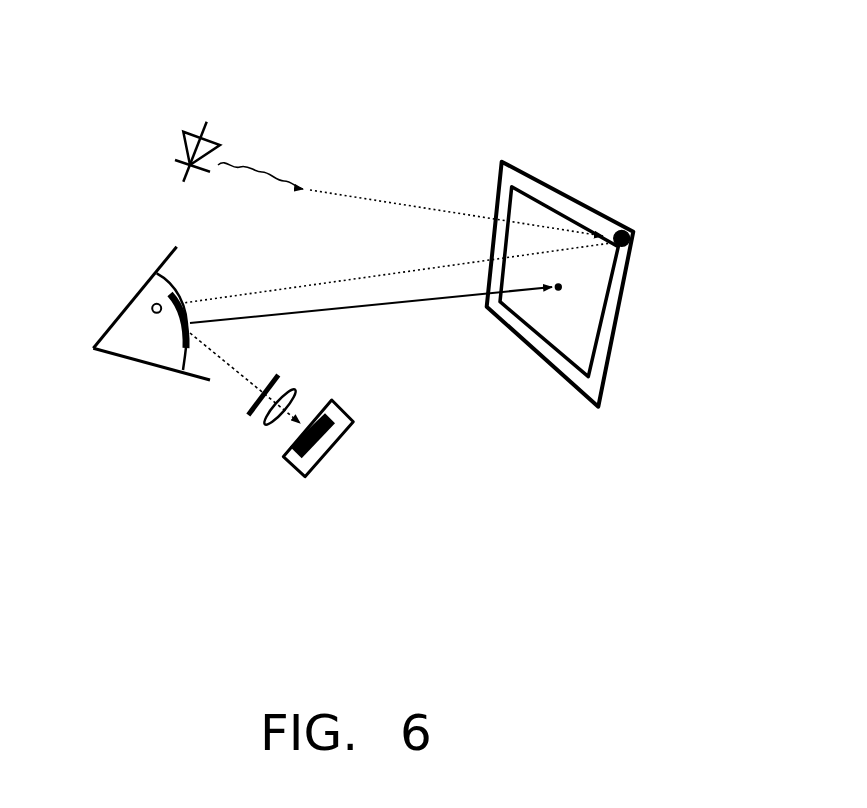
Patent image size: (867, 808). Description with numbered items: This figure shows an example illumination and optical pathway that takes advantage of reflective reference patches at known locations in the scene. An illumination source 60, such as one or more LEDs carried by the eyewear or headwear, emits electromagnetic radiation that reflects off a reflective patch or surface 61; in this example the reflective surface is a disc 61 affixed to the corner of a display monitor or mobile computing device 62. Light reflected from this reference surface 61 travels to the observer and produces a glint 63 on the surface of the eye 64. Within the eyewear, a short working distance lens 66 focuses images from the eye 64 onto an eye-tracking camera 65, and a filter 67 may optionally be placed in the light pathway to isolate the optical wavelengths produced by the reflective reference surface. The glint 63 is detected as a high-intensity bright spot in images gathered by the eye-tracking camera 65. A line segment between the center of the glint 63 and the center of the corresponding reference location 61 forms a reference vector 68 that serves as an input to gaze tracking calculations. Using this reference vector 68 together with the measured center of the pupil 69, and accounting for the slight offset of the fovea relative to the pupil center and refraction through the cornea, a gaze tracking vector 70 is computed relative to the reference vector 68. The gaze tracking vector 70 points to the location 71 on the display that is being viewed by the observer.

The illumination source 60 is at (177, 125).
The reflective patch or surface 61 is at (623, 222).
The display monitor or mobile computing device 62 is at (522, 161).
The glint 63 is at (145, 310).
The eye 64 is at (144, 338).
The eye-tracking camera 65 is at (289, 476).
The short working distance lens 66 is at (261, 434).
The filter 67 is at (247, 418).
The reference vector 68 is at (374, 273).
The pupil 69 is at (197, 328).
The gaze tracking vector 70 is at (452, 300).
The location being viewed 71 is at (558, 299).